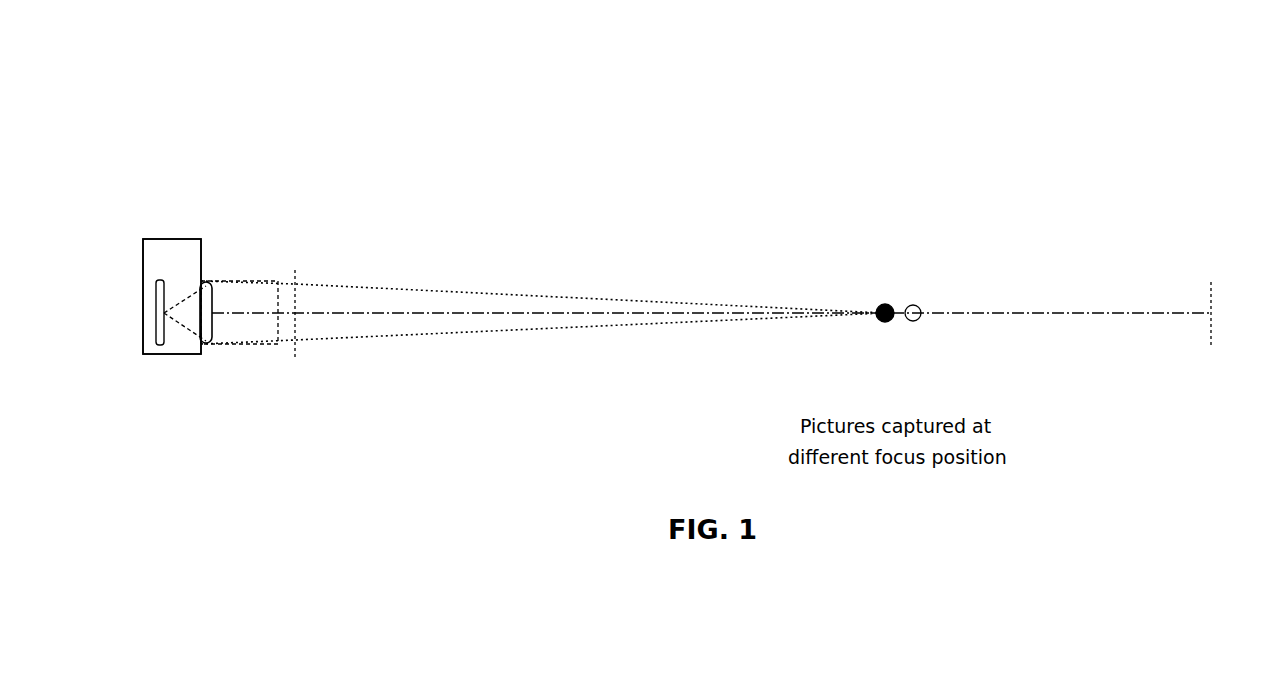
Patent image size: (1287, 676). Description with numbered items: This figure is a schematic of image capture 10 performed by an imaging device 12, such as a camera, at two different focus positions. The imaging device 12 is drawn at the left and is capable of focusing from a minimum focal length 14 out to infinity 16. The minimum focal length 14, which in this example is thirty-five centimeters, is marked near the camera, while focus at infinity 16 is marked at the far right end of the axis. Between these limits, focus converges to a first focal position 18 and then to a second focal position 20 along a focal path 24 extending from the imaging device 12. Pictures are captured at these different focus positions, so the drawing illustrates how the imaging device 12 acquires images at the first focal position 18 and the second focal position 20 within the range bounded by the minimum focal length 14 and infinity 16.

The image capture 10 is at (172, 92).
The imaging device 12 is at (240, 238).
The minimum focal length 14 is at (302, 345).
The infinity 16 is at (1213, 337).
The first focal position 18 is at (877, 305).
The second focal position 20 is at (919, 304).
The focal path 24 is at (483, 295).